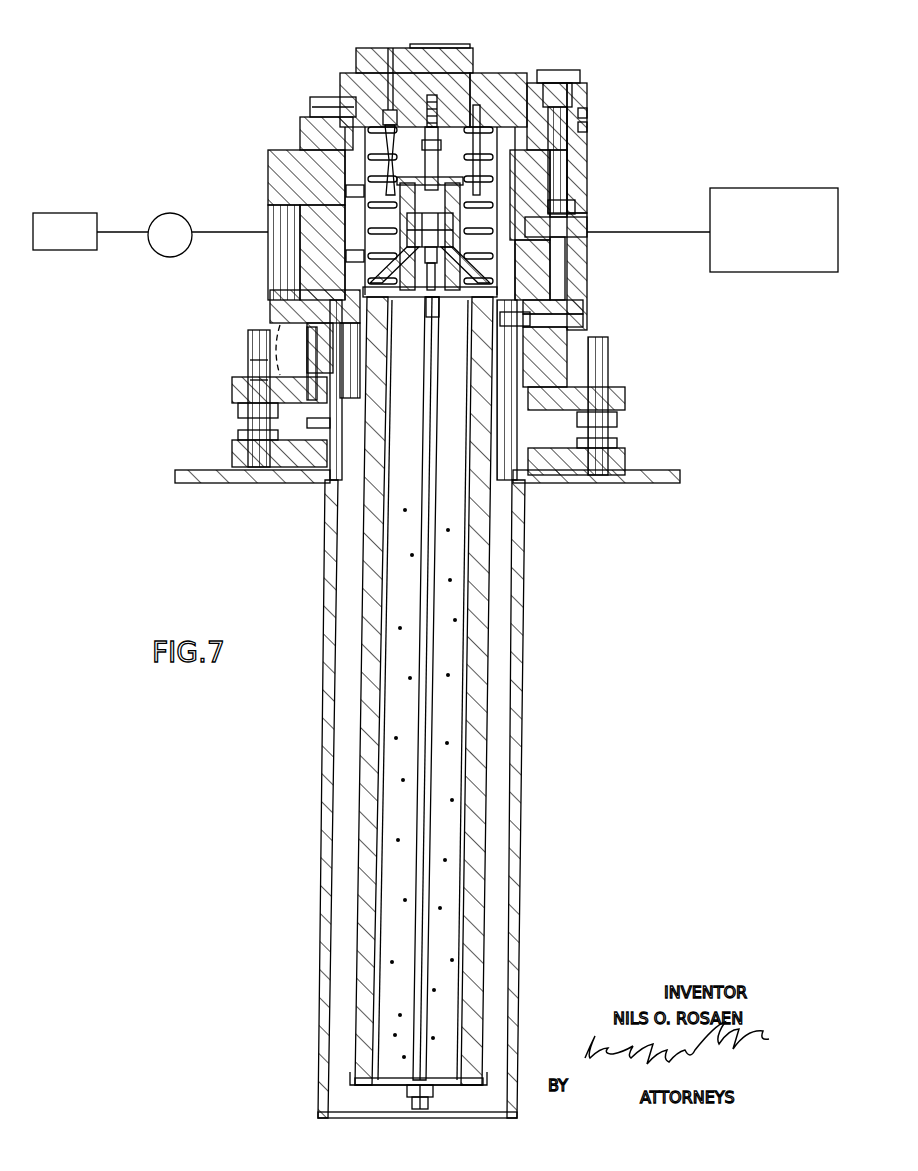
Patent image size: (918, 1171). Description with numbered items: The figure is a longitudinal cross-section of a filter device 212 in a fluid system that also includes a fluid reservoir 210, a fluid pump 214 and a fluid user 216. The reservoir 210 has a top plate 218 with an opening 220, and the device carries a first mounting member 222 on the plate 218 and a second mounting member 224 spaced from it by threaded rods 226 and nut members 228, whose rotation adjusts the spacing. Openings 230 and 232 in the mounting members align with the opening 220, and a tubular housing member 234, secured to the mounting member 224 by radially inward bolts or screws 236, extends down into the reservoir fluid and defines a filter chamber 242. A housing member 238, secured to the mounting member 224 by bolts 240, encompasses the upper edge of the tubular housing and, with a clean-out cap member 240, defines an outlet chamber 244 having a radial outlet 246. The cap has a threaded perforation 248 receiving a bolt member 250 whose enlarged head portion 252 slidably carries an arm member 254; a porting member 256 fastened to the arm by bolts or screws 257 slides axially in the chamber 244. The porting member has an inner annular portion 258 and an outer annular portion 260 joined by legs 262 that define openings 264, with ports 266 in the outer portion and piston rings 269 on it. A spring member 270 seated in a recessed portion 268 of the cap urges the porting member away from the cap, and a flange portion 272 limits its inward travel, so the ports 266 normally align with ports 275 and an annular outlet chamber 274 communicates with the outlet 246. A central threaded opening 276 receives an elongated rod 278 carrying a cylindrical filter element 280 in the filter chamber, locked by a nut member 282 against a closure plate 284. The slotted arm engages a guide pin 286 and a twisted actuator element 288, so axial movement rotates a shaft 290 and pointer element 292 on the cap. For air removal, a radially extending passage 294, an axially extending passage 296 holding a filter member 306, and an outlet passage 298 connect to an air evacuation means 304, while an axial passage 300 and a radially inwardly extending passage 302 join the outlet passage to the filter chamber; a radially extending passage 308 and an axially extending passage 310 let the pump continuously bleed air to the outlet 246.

The fluid reservoir 210 is at (620, 581).
The filter device 212 is at (592, 301).
The fluid pump 214 is at (166, 222).
The fluid user 216 is at (75, 212).
The top plate 218 is at (640, 481).
The opening 220 is at (520, 496).
The first mounting member 222 is at (625, 456).
The second mounting member 224 is at (625, 396).
The threaded rods 226 is at (252, 350).
The nut members 228 is at (240, 425).
The opening 230 is at (330, 488).
The opening 232 is at (323, 420).
The tubular housing member 234 is at (525, 731).
The bolts or screws 236 is at (315, 332).
The housing member 238 is at (585, 192).
The clean-out cap member 240 is at (540, 92).
The filter chamber 242 is at (505, 670).
The outlet chamber 244 is at (537, 195).
The outlet 246 is at (268, 196).
The threaded perforation 248 is at (436, 106).
The bolt member 250 is at (439, 150).
The enlarged head portion 252 is at (431, 222).
The arm member 254 is at (486, 154).
The porting member 256 is at (437, 315).
The bolts or screws 257 is at (400, 206).
The inner annular portion 258 is at (462, 208).
The outer annular portion 260 is at (388, 140).
The legs 262 is at (389, 315).
The openings 264 is at (400, 290).
The ports 266 is at (350, 222).
The recessed portion 268 is at (560, 70).
The piston rings 269 is at (352, 196).
The spring member 270 is at (405, 100).
The flange portion 272 is at (348, 330).
The annular outlet chamber 274 is at (306, 177).
The ports 275 is at (355, 256).
The central threaded opening 276 is at (424, 262).
The elongated rod 278 is at (440, 944).
The filter element 280 is at (490, 893).
The nut member 282 is at (433, 1098).
The closure plate 284 is at (373, 1087).
The guide pin 286 is at (492, 84).
The actuator element 288 is at (423, 146).
The shaft 290 is at (390, 46).
The pointer element 292 is at (358, 54).
The radially extending passage 294 is at (587, 118).
The axially extending passage 296 is at (575, 212).
The outlet passage 298 is at (588, 228).
The axial passage 300 is at (565, 275).
The radially inwardly extending passage 302 is at (580, 318).
The air evacuation means 304 is at (797, 198).
The filter member 306 is at (587, 127).
The radially extending passage 308 is at (322, 112).
The axially extending passage 310 is at (310, 134).